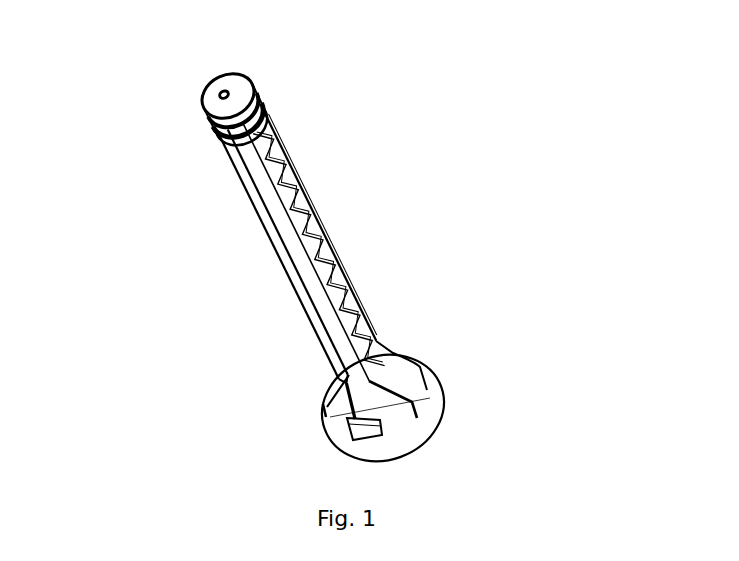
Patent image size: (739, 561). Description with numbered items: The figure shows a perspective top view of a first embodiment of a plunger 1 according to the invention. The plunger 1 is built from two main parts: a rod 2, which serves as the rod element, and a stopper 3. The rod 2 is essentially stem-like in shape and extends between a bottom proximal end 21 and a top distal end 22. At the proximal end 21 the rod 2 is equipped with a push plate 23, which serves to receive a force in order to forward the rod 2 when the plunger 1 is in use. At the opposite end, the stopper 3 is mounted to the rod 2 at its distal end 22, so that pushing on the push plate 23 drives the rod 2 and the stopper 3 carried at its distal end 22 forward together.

The plunger 1 is at (214, 248).
The rod 2 is at (366, 248).
The stopper 3 is at (214, 93).
The proximal end 21 is at (427, 435).
The distal end 22 is at (244, 79).
The push plate 23 is at (333, 435).